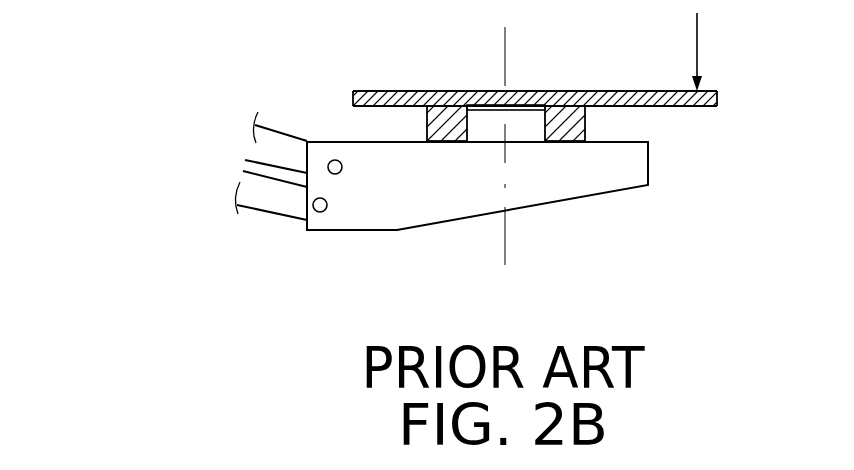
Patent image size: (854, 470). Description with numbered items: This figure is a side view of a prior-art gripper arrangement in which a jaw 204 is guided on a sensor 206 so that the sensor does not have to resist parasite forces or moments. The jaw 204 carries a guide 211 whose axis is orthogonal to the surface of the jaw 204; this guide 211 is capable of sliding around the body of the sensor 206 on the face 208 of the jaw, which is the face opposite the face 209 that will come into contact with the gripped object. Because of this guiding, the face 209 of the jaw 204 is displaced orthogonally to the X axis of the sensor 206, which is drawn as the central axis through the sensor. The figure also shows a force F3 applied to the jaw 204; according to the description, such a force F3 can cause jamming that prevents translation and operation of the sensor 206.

The jaw 204 is at (405, 91).
The face of the jaw 209 is at (366, 91).
The face opposite the contact face 208 is at (658, 106).
The guide 211 is at (568, 118).
The sensor 206 is at (523, 133).
The X axis X is at (505, 253).
The force F3 is at (716, 51).